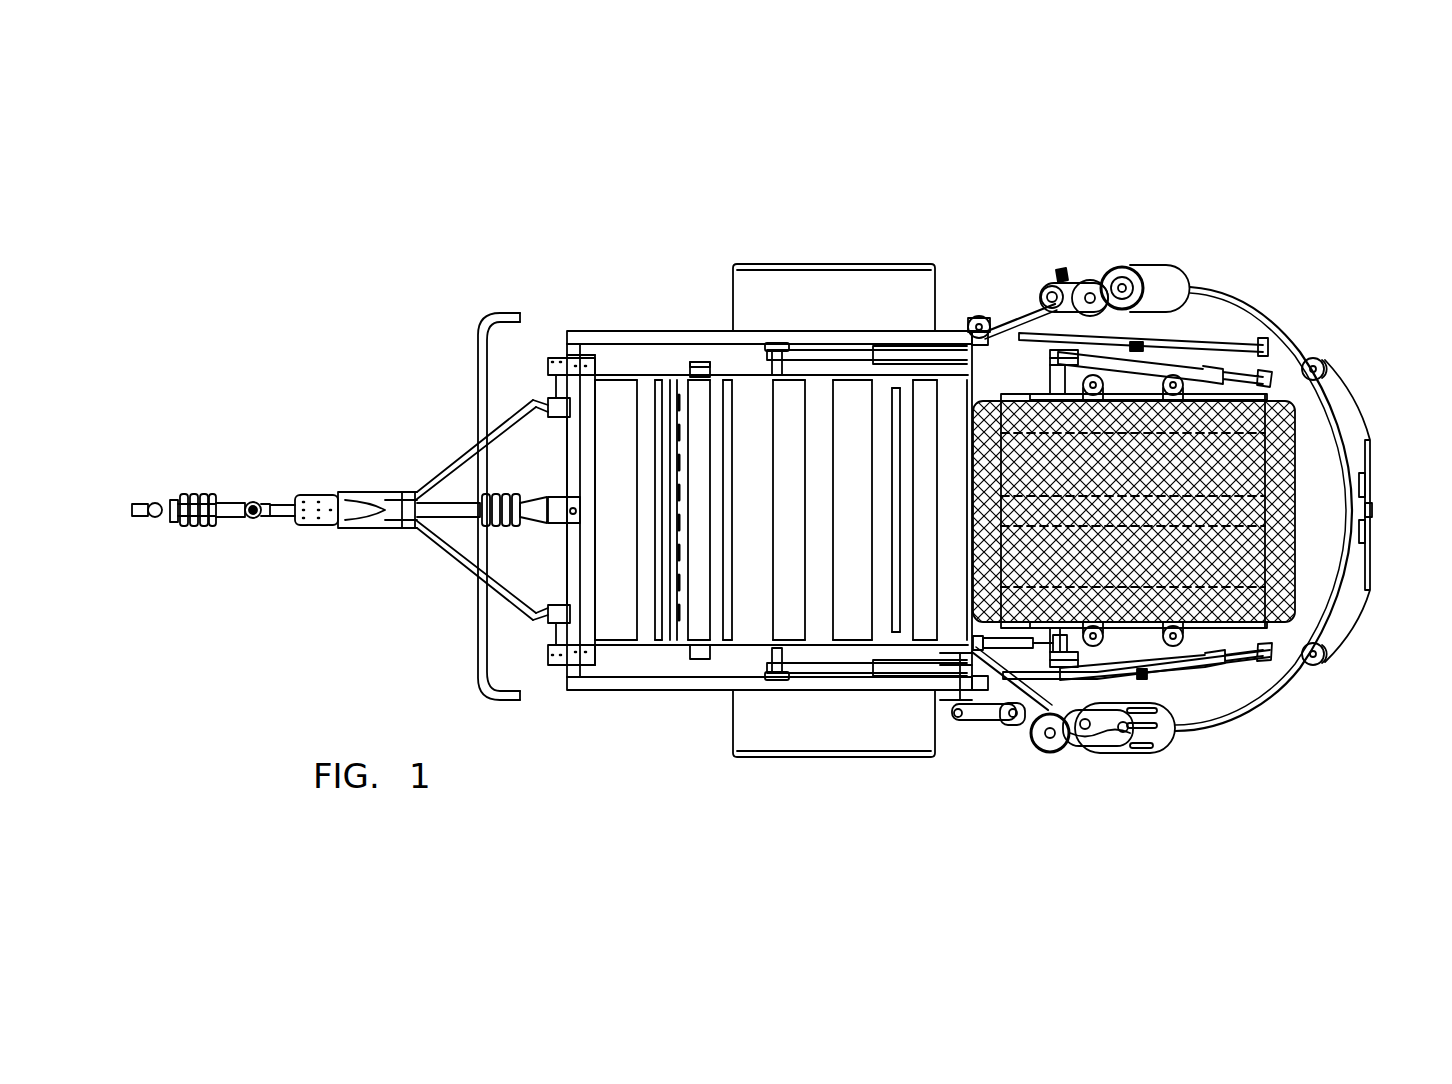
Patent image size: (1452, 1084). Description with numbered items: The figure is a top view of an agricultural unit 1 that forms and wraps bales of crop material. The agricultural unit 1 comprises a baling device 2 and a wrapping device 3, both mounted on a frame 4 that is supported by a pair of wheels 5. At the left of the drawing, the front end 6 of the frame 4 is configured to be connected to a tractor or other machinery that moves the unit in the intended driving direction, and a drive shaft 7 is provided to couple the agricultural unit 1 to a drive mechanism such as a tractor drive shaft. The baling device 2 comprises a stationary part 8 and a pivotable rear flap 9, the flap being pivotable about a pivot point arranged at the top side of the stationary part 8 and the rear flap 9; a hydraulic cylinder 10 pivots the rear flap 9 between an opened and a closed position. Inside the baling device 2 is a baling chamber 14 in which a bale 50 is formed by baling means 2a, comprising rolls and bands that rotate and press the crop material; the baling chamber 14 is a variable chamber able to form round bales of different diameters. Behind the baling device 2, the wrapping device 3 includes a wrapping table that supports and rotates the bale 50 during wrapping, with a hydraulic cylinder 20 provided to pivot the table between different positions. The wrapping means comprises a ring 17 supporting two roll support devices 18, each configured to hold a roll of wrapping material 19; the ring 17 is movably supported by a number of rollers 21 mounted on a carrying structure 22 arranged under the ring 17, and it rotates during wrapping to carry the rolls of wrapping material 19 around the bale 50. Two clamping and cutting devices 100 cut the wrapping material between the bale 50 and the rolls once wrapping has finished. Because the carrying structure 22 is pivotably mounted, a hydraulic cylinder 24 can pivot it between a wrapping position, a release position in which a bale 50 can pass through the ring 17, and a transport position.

The agricultural unit 1 is at (423, 345).
The baling device 2 is at (667, 303).
The baling means 2a is at (787, 590).
The wrapping device 3 is at (1184, 242).
The frame 4 is at (660, 688).
The wheels 5 is at (768, 290).
The front end 6 is at (266, 506).
The drive shaft 7 is at (448, 510).
The stationary part 8 is at (622, 352).
The pivotable rear flap 9 is at (883, 355).
The hydraulic cylinder 10 is at (948, 398).
The baling chamber 14 is at (838, 440).
The ring 17 is at (1247, 317).
The roll support device 18 is at (1127, 747).
The roll of wrapping material 19 is at (1157, 288).
The hydraulic cylinder 20 is at (1061, 274).
The rollers 21 is at (980, 316).
The carrying structure 22 is at (1364, 406).
The hydraulic cylinder 24 is at (1214, 287).
The bale 50 is at (1283, 519).
The clamping and cutting device 100 is at (1215, 328).